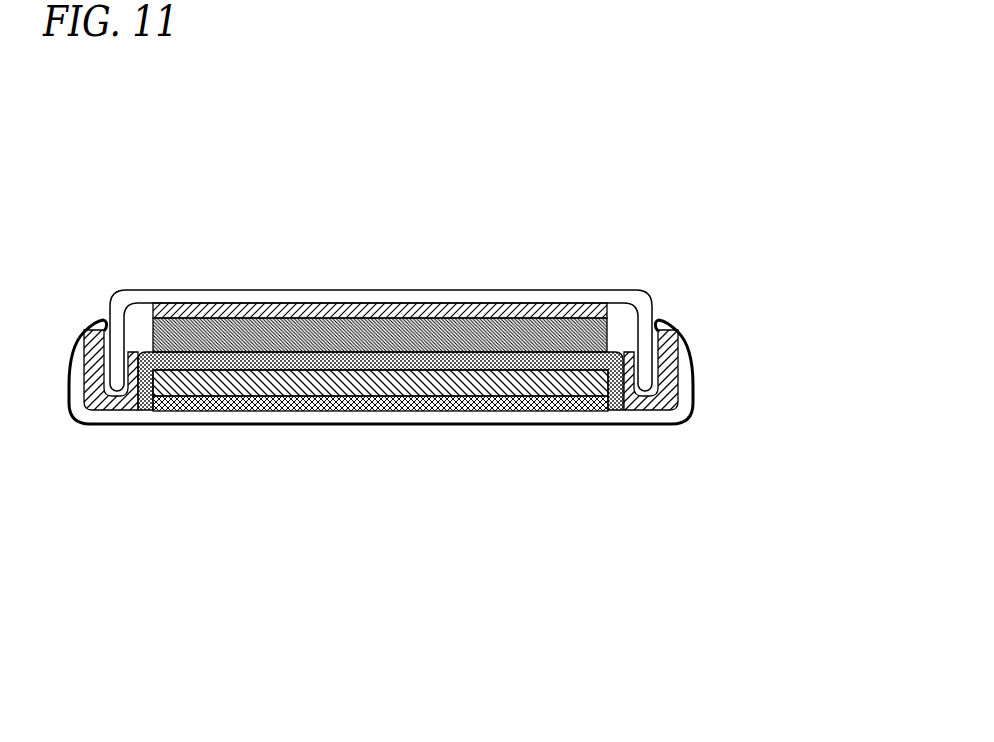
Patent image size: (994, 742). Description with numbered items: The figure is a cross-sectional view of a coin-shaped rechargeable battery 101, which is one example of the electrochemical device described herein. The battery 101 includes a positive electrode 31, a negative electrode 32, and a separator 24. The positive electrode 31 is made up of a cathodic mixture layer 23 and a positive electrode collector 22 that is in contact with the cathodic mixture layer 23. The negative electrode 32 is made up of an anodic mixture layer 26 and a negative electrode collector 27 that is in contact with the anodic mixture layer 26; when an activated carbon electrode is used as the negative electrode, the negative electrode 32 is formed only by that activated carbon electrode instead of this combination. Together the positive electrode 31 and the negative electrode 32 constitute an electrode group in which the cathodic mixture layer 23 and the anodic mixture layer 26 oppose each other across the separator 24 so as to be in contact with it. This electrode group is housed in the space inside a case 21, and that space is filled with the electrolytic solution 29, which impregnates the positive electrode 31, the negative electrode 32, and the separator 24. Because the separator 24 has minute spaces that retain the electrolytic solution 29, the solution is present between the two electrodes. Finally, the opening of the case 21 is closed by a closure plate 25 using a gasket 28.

The case 21 is at (202, 418).
The positive electrode collector 22 is at (485, 542).
The cathodic mixture layer 23 is at (518, 395).
The separator 24 is at (612, 300).
The closure plate 25 is at (172, 295).
The anodic mixture layer 26 is at (430, 193).
The negative electrode collector 27 is at (442, 303).
The gasket 28 is at (658, 408).
The electrolytic solution 29 is at (625, 325).
The positive electrode 31 is at (380, 489).
The negative electrode 32 is at (380, 247).
The coin-shaped rechargeable battery 101 is at (752, 178).